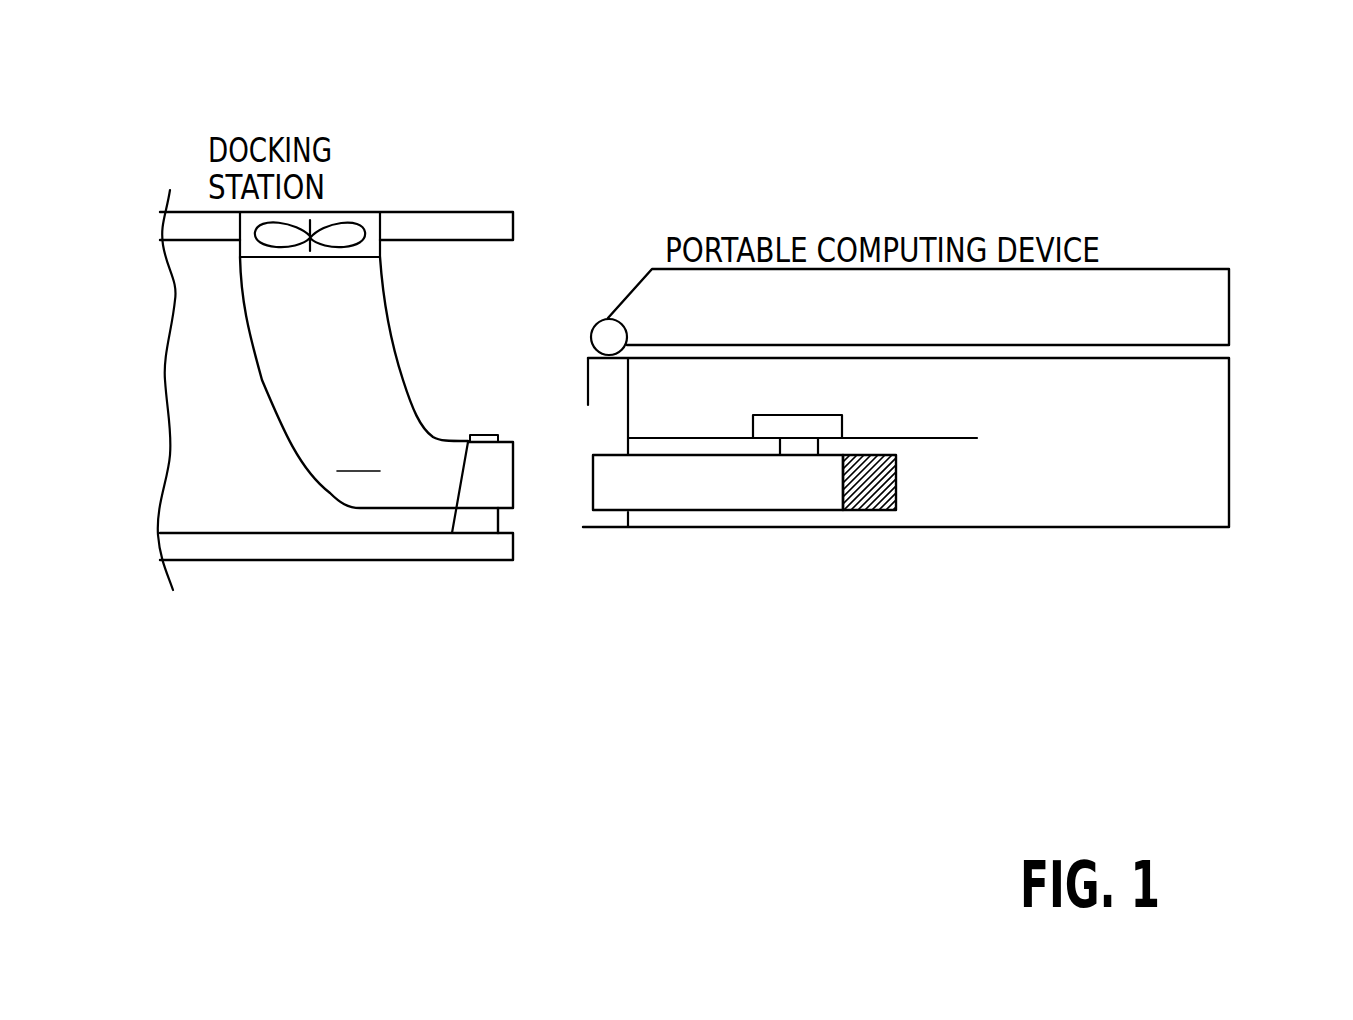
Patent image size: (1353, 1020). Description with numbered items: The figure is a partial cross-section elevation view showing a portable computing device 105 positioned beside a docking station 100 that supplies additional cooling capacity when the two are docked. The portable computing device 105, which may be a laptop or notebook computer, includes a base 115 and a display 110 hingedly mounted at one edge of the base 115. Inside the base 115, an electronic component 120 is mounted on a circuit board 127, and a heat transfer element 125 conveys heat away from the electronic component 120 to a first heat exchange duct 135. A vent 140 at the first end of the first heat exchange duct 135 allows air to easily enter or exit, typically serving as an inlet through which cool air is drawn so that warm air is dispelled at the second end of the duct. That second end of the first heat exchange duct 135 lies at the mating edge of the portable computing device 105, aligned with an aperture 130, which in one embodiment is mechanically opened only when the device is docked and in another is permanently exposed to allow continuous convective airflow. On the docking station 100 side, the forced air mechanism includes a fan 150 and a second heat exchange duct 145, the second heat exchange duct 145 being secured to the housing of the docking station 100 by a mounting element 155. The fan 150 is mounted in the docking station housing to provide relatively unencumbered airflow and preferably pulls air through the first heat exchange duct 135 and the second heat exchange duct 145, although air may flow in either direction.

The docking station 100 is at (350, 565).
The portable computing device 105 is at (1235, 150).
The display 110 is at (1195, 334).
The base 115 is at (1108, 540).
The electronic component 120 is at (847, 430).
The heat transfer element 125 is at (772, 450).
The circuit board 127 is at (955, 443).
The aperture 130 is at (593, 438).
The first heat exchange duct 135 is at (720, 500).
The vent 140 is at (860, 512).
The second heat exchange duct 145 is at (376, 395).
The fan 150 is at (355, 210).
The mounting element 155 is at (490, 432).